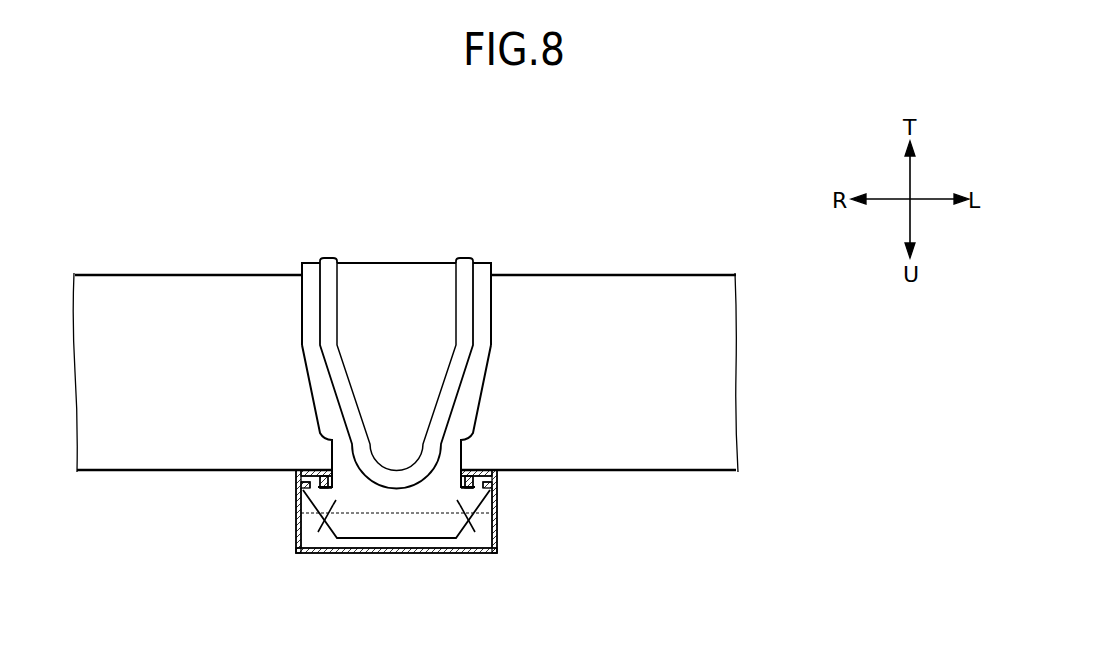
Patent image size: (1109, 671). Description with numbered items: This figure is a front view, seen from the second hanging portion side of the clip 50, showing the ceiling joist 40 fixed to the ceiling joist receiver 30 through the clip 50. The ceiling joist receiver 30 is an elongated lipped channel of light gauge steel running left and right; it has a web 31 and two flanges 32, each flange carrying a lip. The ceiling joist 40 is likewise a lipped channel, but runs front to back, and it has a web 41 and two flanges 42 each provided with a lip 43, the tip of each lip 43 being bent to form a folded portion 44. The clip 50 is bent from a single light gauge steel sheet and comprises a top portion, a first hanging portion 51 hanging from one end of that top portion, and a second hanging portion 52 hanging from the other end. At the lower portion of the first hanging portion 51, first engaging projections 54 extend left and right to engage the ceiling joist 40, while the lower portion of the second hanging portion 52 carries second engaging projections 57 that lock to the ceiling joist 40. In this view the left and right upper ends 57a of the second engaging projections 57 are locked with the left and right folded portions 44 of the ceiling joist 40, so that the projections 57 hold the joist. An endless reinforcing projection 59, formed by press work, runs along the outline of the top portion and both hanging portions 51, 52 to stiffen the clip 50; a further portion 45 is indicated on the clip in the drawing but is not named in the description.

The ceiling joist receiver 30 is at (461, 374).
The web 31 is at (720, 373).
The flange 32 is at (712, 275).
The ceiling joist 40 is at (395, 559).
The web 41 is at (353, 553).
The flange 42 is at (297, 520).
The lip 43 is at (305, 472).
The folded portion 44 is at (320, 467).
The corner portion 45 is at (322, 446).
The clip 50 is at (396, 328).
The first hanging portion 51 is at (395, 528).
The second hanging portion 52 is at (483, 303).
The first engaging projection 54 is at (312, 555).
The second engaging projection 57 is at (298, 531).
The upper end of second engaging projection 57a is at (300, 508).
The reinforcing projection 59 is at (463, 267).